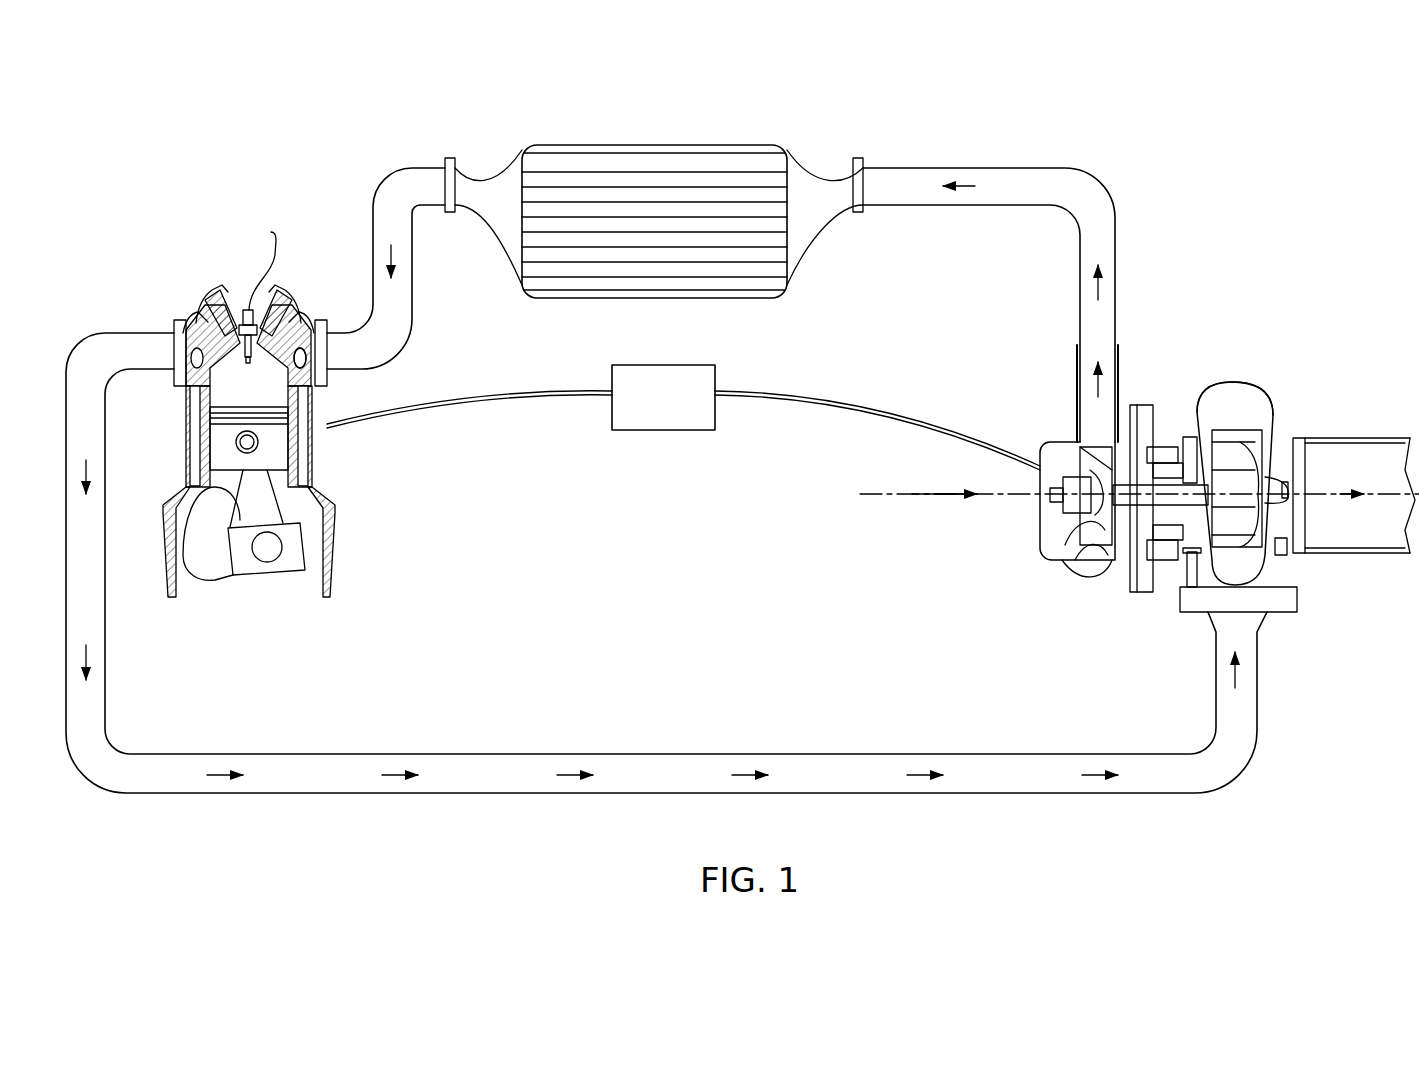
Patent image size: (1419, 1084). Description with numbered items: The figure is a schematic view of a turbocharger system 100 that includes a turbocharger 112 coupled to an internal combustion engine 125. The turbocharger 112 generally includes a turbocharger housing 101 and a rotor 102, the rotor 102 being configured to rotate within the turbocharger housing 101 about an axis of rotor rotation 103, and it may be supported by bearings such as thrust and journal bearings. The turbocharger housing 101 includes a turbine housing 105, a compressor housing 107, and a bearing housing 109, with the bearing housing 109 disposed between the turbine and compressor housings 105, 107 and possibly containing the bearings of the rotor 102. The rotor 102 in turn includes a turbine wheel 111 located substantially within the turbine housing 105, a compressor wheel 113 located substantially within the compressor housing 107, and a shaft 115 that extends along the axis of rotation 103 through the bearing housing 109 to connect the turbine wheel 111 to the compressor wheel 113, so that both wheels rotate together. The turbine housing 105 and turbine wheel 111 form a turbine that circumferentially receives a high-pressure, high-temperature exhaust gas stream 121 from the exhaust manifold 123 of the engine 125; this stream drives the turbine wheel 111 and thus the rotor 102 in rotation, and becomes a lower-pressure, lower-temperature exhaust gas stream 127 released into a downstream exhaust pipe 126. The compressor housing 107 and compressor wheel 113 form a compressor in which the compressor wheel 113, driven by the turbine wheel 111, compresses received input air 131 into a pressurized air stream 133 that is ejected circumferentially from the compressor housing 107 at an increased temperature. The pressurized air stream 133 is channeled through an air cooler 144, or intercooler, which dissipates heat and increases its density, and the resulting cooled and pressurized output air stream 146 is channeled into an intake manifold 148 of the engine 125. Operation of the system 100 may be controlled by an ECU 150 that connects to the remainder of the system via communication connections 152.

The turbocharger system 100 is at (1332, 275).
The turbocharger housing 101 is at (1154, 465).
The rotor 102 is at (1140, 510).
The axis of rotor rotation 103 is at (893, 495).
The turbine housing 105 is at (1250, 398).
The compressor housing 107 is at (1085, 562).
The bearing housing 109 is at (1165, 430).
The turbine wheel 111 is at (1223, 480).
The turbocharger 112 is at (1240, 305).
The compressor wheel 113 is at (1080, 525).
The shaft 115 is at (1170, 497).
The exhaust gas stream 121 is at (750, 775).
The exhaust manifold 123 is at (198, 336).
The internal combustion engine 125 is at (288, 458).
The exhaust pipe 126 is at (1360, 432).
The lower-pressure exhaust gas stream 127 is at (1340, 494).
The input air 131 is at (948, 494).
The pressurized air stream 133 is at (1095, 387).
The air cooler 144 is at (652, 172).
The output air stream 146 is at (388, 257).
The intake manifold 148 is at (312, 365).
The ECU 150 is at (660, 431).
The communication connections 152 is at (808, 410).